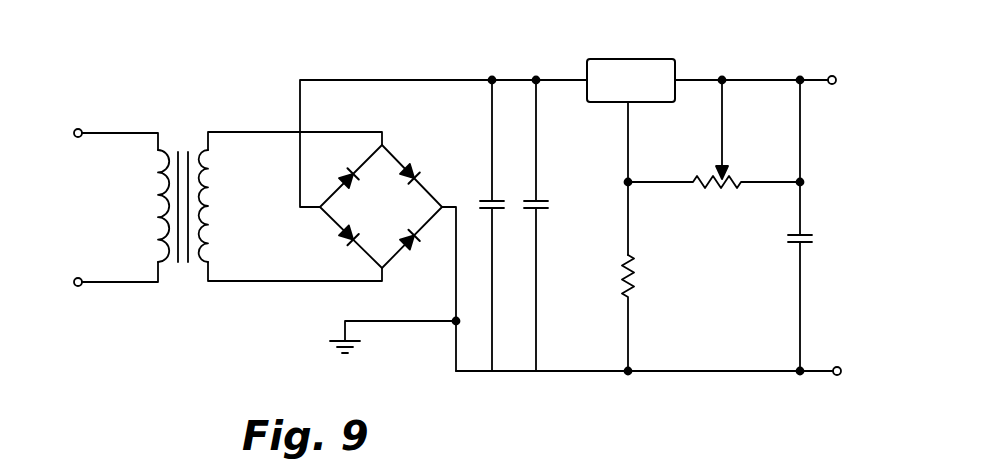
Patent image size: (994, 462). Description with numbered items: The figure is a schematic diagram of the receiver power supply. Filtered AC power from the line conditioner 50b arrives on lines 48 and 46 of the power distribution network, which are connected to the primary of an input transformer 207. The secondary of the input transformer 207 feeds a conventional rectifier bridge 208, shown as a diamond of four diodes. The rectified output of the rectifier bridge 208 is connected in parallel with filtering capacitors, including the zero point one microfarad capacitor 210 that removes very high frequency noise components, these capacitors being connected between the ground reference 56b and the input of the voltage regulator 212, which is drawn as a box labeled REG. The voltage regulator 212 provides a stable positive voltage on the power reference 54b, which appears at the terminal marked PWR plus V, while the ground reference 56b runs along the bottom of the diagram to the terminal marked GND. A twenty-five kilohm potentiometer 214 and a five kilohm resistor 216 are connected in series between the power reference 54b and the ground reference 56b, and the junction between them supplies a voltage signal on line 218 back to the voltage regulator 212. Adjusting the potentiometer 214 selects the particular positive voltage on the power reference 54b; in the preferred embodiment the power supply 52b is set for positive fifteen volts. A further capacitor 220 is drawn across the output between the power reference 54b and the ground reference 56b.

The filtered AC power line 46 is at (116, 284).
The filtered AC power line 48 is at (118, 135).
The line conditioner 50b is at (228, 217).
The input transformer 207 is at (203, 203).
The rectifier bridge 208 is at (443, 225).
The capacitor 210 is at (540, 206).
The voltage regulator 212 is at (637, 58).
The potentiometer 214 is at (722, 190).
The resistor 216 is at (630, 283).
The line 218 is at (628, 152).
The power supply 52b is at (676, 313).
The power reference 54b is at (801, 126).
The ground reference 56b is at (801, 332).
The output capacitor 220 is at (808, 240).